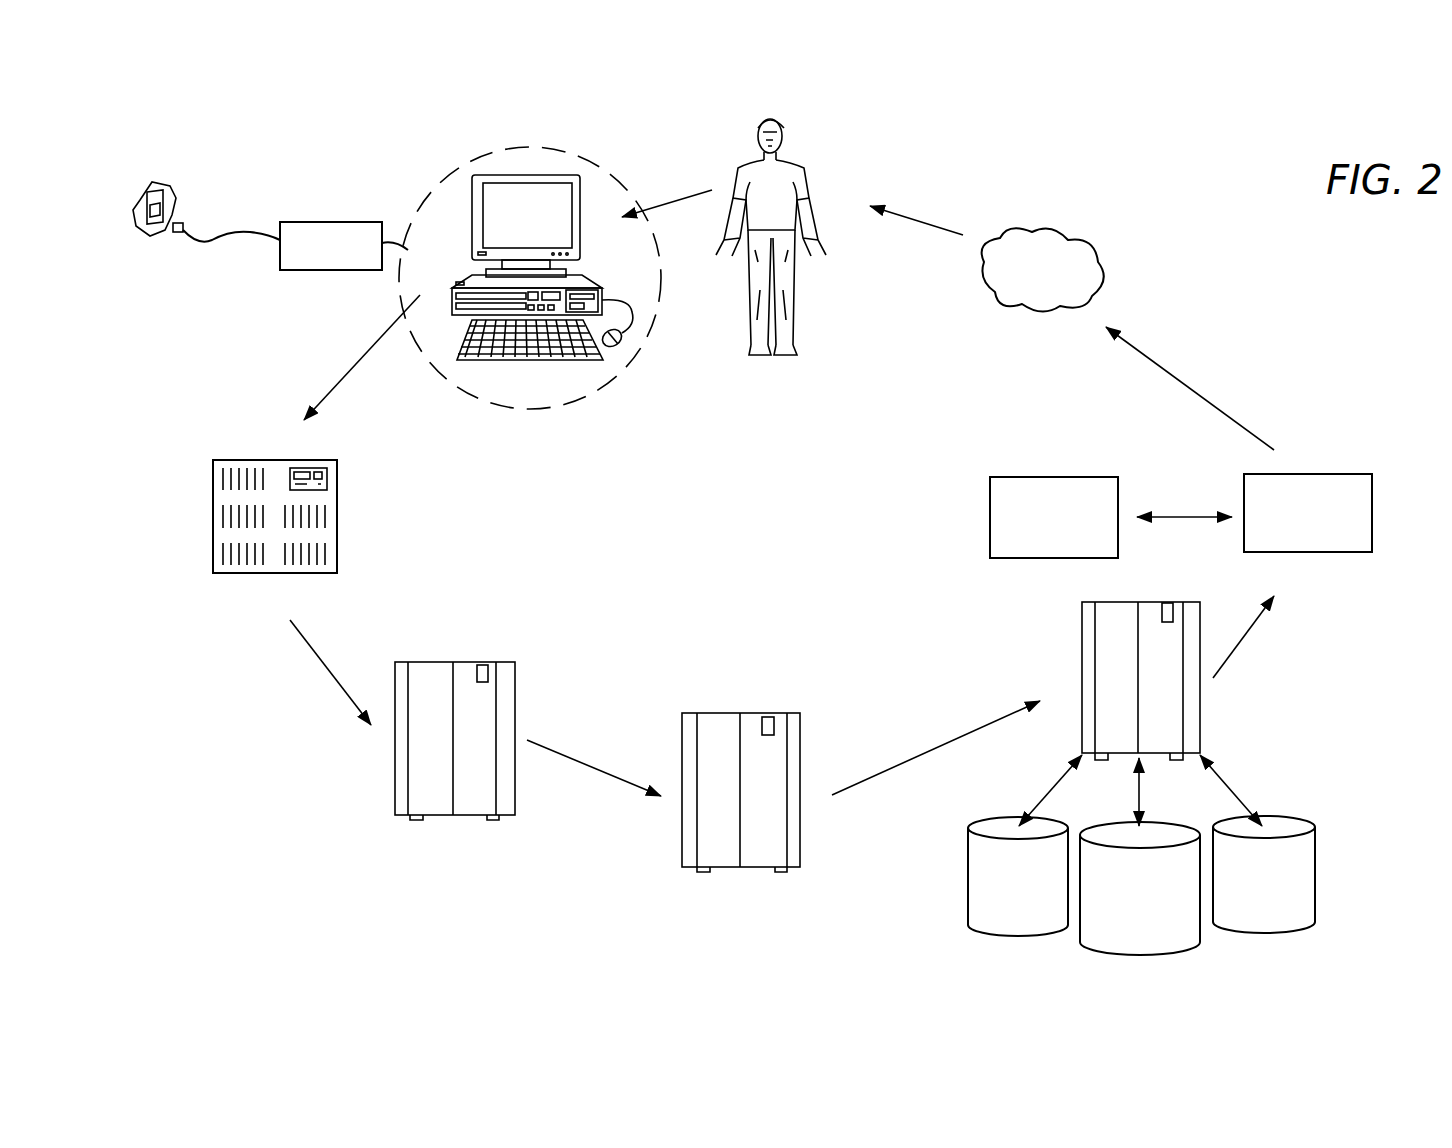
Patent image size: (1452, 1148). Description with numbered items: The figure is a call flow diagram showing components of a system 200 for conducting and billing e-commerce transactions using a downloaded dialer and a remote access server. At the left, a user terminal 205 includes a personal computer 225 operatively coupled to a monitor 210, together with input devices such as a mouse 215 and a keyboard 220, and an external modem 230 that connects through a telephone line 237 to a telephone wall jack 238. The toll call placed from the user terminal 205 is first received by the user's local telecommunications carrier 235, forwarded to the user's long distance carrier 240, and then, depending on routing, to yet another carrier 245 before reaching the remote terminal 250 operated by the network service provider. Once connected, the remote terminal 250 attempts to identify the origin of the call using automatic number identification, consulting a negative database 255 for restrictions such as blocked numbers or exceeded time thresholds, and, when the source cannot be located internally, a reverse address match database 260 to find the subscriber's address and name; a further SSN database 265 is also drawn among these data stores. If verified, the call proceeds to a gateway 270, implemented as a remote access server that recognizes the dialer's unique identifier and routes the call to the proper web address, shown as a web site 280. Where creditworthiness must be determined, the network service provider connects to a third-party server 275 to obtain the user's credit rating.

The system 200 is at (1131, 162).
The user terminal 205 is at (440, 182).
The monitor 210 is at (527, 175).
The mouse 215 is at (620, 342).
The keyboard 220 is at (568, 360).
The personal computer 225 is at (603, 292).
The modem 230 is at (330, 222).
The local telecommunications carrier 235 is at (247, 460).
The telephone line 237 is at (232, 232).
The telephone wall jack 238 is at (172, 200).
The long distance carrier 240 is at (395, 768).
The carrier 245 is at (682, 833).
The remote terminal 250 is at (1082, 653).
The negative database 255 is at (968, 868).
The reverse address match database 260 is at (1200, 935).
The SSN database 265 is at (1315, 853).
The gateway 270 is at (1372, 510).
The third-party server 275 is at (990, 513).
The web site 280 is at (1053, 310).